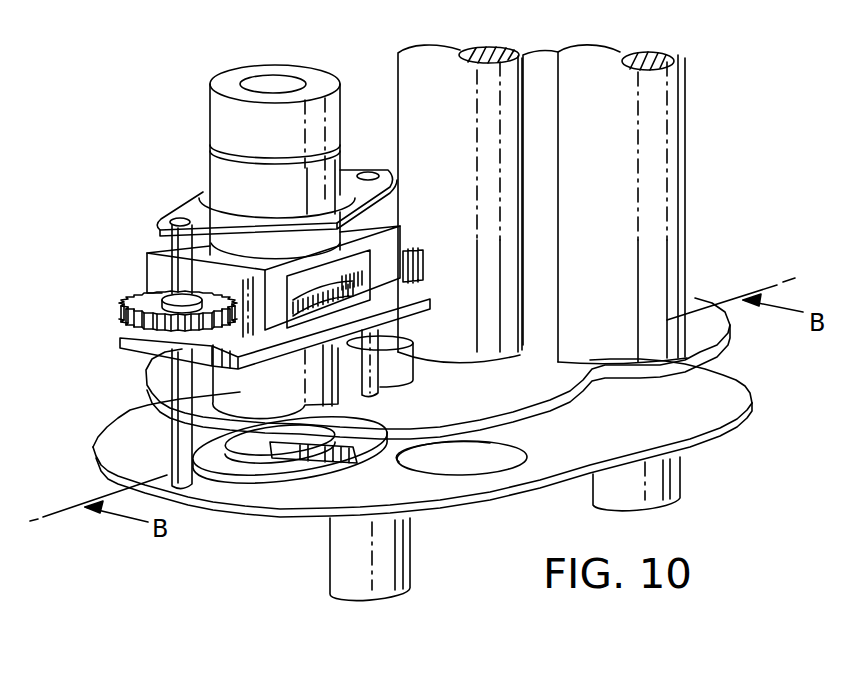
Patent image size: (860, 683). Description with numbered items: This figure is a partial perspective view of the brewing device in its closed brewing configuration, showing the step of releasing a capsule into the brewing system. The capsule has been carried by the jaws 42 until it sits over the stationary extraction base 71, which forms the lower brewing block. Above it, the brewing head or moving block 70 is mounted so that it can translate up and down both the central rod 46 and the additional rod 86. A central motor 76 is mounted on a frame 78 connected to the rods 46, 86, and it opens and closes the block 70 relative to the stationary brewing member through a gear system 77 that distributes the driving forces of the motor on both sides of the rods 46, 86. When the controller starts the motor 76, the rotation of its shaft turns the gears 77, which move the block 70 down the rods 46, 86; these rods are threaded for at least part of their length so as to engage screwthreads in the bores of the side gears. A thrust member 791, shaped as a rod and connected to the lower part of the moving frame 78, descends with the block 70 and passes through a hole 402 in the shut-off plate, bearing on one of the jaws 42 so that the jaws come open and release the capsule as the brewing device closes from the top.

The jaws 42 is at (372, 447).
The hole 402 is at (367, 403).
The stationary extraction base 71 is at (231, 483).
The thrust member 791 is at (380, 378).
The central motor 76 is at (254, 75).
The central rod 46 is at (358, 215).
The frame 78 is at (142, 251).
The moving block 70 is at (133, 287).
The gear system 77 is at (136, 343).
The additional rod 86 is at (177, 428).